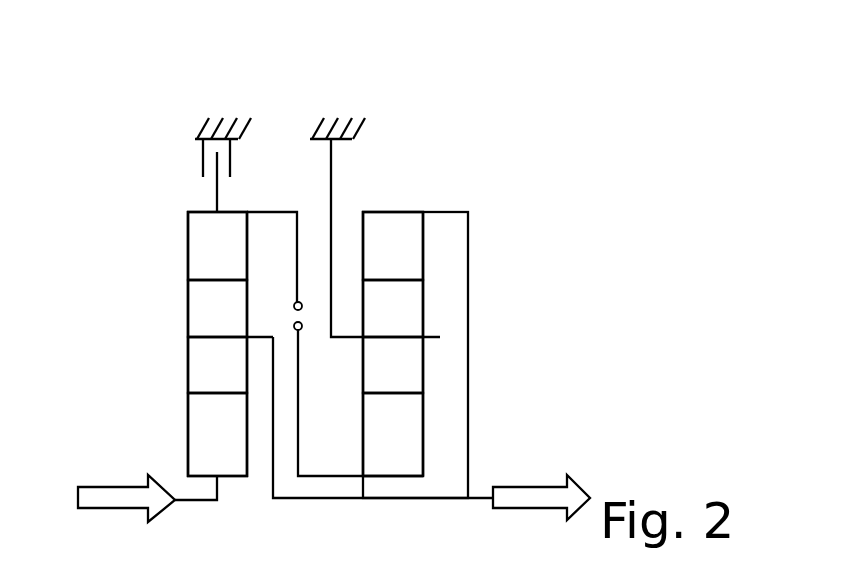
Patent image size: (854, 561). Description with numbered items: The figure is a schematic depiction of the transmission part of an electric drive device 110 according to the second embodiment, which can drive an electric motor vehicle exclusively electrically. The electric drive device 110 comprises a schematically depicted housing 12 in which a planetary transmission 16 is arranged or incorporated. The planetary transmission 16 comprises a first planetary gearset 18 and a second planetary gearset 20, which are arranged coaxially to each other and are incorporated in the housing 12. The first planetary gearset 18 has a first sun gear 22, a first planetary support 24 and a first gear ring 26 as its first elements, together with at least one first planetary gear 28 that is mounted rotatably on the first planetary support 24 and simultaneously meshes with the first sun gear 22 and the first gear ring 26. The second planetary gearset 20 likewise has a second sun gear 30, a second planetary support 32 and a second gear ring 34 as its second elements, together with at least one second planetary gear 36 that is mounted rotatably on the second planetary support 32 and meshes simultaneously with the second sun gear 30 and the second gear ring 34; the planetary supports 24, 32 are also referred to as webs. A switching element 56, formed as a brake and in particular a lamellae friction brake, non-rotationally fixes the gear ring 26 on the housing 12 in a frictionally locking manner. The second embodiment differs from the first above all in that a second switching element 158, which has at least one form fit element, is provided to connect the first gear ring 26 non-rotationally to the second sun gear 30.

The electric drive device 110 is at (518, 225).
The housing 12 is at (210, 130).
The planetary transmission 16 is at (373, 147).
The first planetary gearset 18 is at (198, 195).
The second planetary gearset 20 is at (388, 203).
The first sun gear 22 is at (200, 448).
The first planetary support 24 is at (198, 335).
The first gear ring 26 is at (200, 263).
The first planetary gear 28 is at (198, 372).
The second sun gear 30 is at (402, 455).
The second planetary support 32 is at (405, 337).
The second gear ring 34 is at (405, 272).
The second planetary gear 36 is at (405, 382).
The switching element 56 is at (238, 163).
The second switching element 158 is at (308, 323).